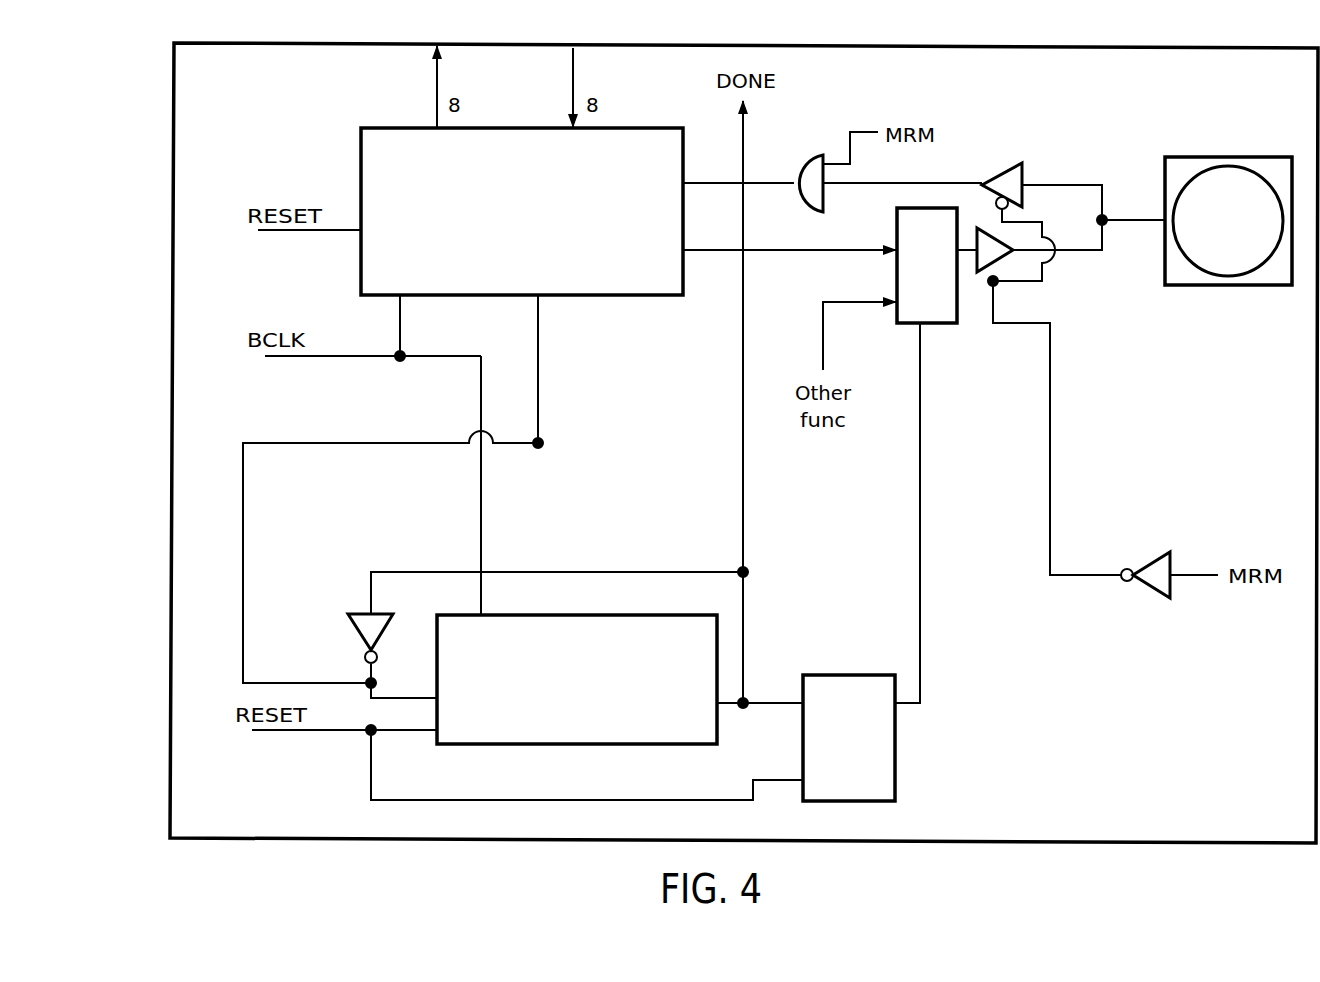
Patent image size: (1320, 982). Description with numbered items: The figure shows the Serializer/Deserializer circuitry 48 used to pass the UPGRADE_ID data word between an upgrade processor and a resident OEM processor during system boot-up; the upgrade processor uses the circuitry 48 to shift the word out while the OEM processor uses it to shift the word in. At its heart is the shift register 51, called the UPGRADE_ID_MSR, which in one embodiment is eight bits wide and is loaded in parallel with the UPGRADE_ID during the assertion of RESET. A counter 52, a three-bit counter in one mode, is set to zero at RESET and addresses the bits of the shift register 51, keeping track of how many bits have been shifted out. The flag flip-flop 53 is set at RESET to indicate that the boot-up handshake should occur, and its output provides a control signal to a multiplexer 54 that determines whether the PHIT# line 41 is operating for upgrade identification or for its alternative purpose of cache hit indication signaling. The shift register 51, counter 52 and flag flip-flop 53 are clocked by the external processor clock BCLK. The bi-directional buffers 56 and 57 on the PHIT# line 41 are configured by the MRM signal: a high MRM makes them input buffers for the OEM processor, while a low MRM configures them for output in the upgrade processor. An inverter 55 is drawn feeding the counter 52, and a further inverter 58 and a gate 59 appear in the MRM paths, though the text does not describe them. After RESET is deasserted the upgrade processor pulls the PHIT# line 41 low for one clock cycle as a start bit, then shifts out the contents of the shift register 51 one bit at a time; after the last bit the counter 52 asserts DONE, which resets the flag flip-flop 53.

The Serializer/Deserializer circuitry 48 is at (1053, 47).
The shift register 51 is at (610, 298).
The counter 52 is at (503, 745).
The flag flip-flop 53 is at (848, 675).
The multiplexer 54 is at (910, 325).
The inverter 55 is at (352, 632).
The bi-directional buffer 56 is at (1004, 163).
The bi-directional buffer 57 is at (990, 278).
The inverter 58 is at (1148, 553).
The AND gate 59 is at (812, 155).
The PHIT# line 41 is at (1213, 157).